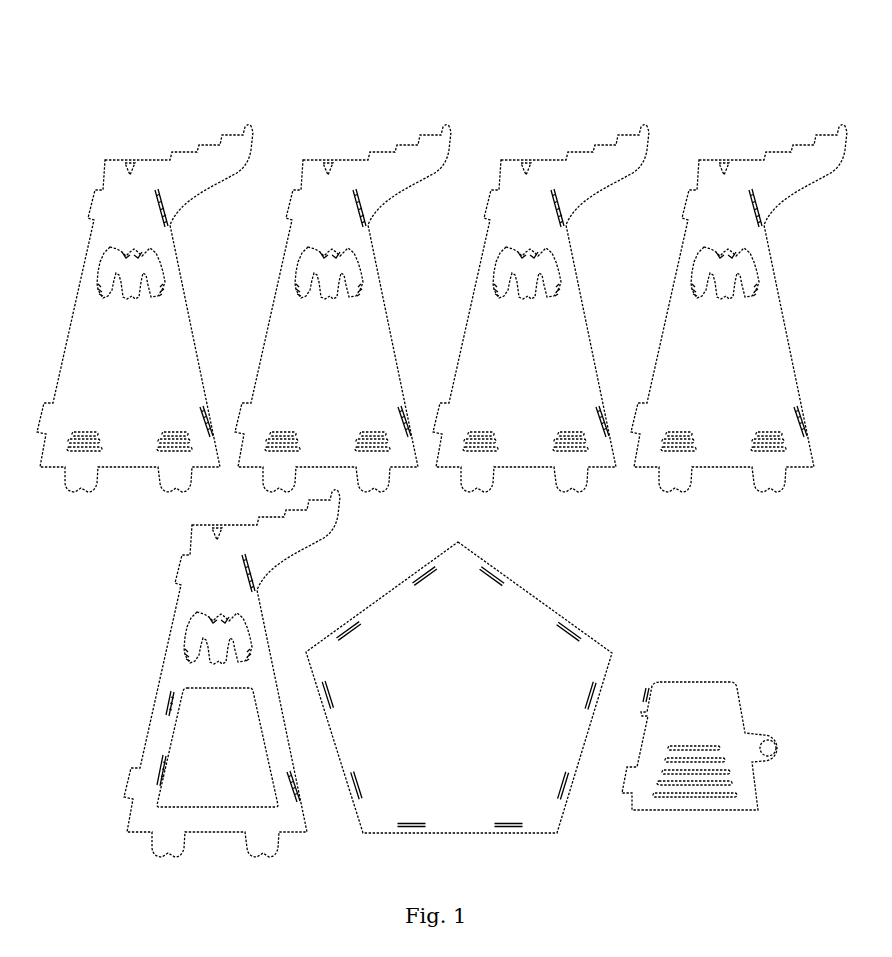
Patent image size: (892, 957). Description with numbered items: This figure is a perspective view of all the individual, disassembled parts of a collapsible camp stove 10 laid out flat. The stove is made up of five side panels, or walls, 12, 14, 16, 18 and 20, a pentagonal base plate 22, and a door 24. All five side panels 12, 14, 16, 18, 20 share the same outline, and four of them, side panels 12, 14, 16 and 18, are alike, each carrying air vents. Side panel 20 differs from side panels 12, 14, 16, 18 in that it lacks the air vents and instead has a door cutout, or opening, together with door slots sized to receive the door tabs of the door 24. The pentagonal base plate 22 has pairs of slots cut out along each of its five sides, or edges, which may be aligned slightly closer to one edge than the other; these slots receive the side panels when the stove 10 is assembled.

The collapsible camp stove 10 is at (247, 88).
The side panel 12 is at (107, 327).
The side panel 14 is at (343, 308).
The side panel 16 is at (541, 308).
The side panel 18 is at (739, 308).
The side panel 20 is at (232, 673).
The pentagonal base plate 22 is at (413, 623).
The door 24 is at (692, 702).